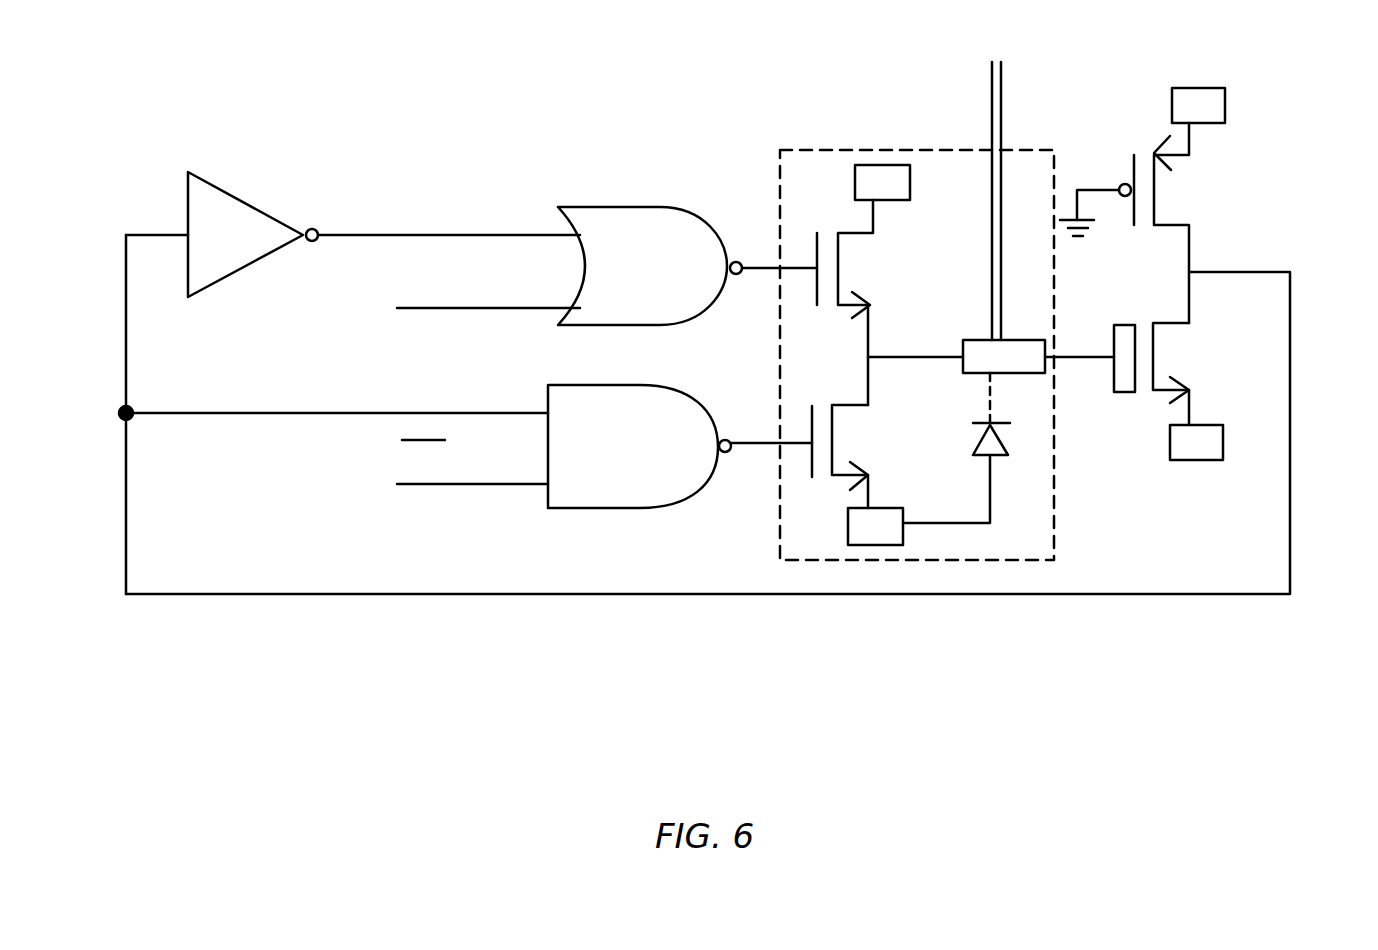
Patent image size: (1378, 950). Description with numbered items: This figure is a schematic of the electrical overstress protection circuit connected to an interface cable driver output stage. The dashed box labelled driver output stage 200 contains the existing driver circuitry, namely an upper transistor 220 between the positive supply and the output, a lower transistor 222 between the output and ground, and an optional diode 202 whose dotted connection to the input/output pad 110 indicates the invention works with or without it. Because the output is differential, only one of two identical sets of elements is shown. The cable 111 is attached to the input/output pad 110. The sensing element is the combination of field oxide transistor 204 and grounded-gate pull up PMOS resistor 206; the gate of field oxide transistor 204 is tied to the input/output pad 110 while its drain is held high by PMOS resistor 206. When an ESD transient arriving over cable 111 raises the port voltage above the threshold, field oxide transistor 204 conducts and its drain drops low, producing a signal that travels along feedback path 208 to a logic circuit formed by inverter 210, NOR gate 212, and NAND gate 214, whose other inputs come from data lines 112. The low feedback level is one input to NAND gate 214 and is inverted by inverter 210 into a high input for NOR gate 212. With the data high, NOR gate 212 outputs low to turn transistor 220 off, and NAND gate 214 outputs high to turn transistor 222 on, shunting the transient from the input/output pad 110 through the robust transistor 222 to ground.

The inverter 210 is at (353, 234).
The data lines 112 is at (461, 388).
The NOR gate 212 is at (687, 266).
The NAND gate 214 is at (680, 446).
The cable interface driver output stage 200 is at (917, 341).
The transistor 220 is at (890, 285).
The transistor 222 is at (901, 475).
The diode 202 is at (1014, 415).
The input/output pad 110 is at (1038, 348).
The cable 111 is at (1040, 201).
The pull up PMOS resistor 206 is at (1205, 205).
The field oxide transistor 204 is at (1179, 391).
The feedback path 208 is at (708, 457).